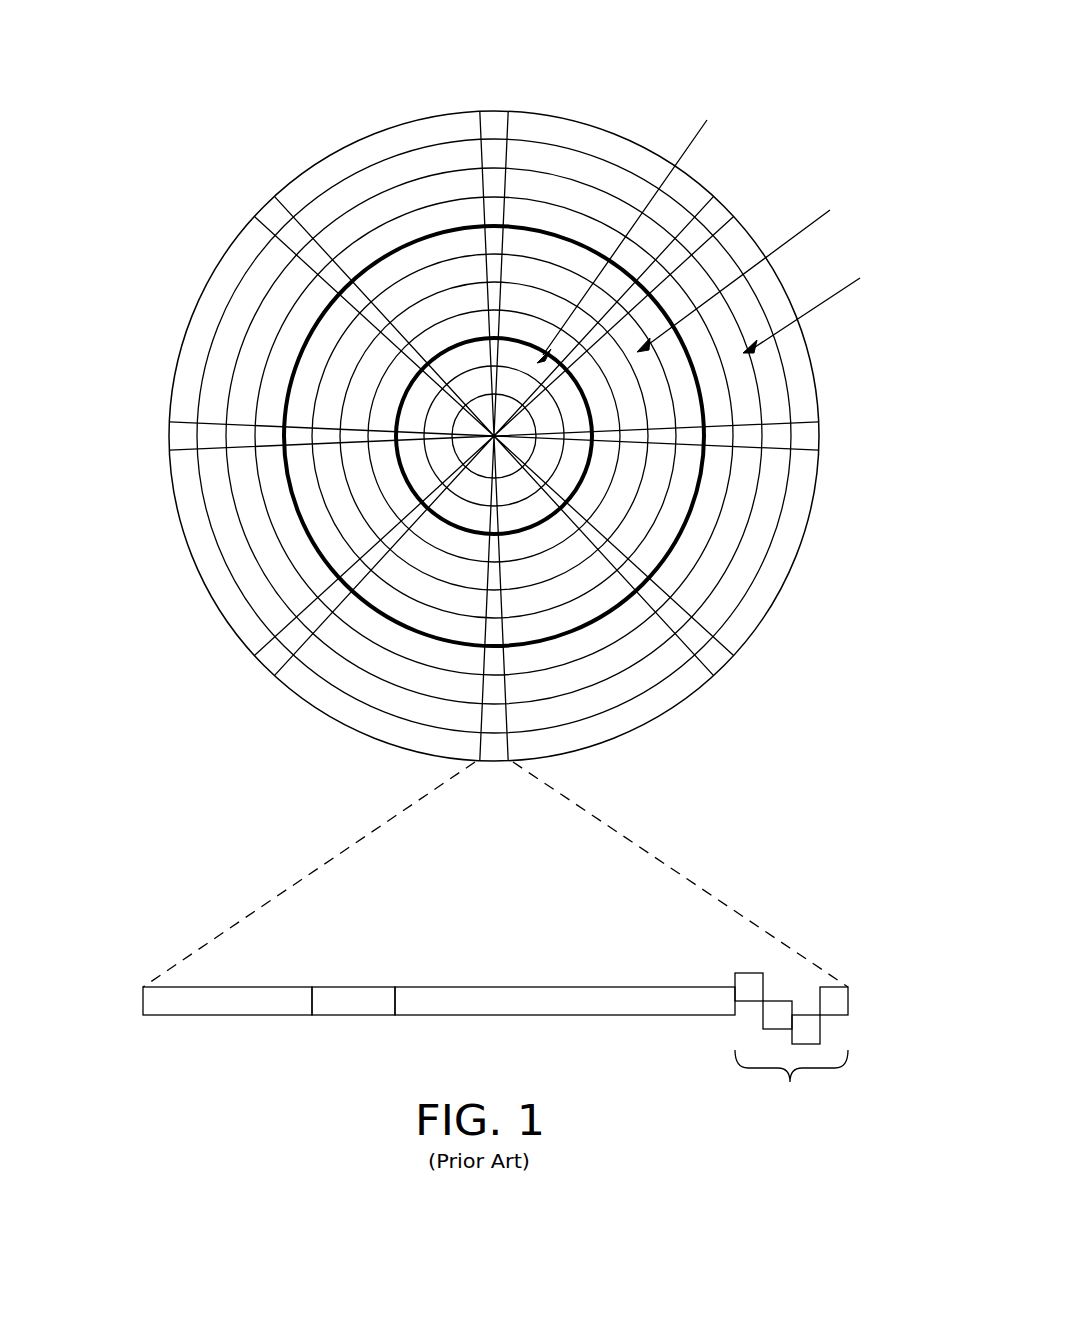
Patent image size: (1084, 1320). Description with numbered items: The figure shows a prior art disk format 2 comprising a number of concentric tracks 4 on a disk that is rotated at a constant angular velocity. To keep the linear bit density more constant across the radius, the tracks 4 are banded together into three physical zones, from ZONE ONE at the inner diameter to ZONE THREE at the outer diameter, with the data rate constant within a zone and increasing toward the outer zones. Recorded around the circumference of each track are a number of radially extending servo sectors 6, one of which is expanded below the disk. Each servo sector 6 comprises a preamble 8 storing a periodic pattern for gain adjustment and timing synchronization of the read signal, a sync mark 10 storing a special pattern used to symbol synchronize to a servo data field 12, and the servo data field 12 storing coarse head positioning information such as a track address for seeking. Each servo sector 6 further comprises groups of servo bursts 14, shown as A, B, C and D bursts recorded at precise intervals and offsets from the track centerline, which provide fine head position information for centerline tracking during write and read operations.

The disk format 2 is at (528, 448).
The tracks 4 is at (605, 173).
The servo sector 6 is at (494, 120).
The preamble 8 is at (207, 1015).
The sync mark 10 is at (349, 1015).
The servo data field 12 is at (553, 1015).
The servo bursts 14 is at (717, 949).